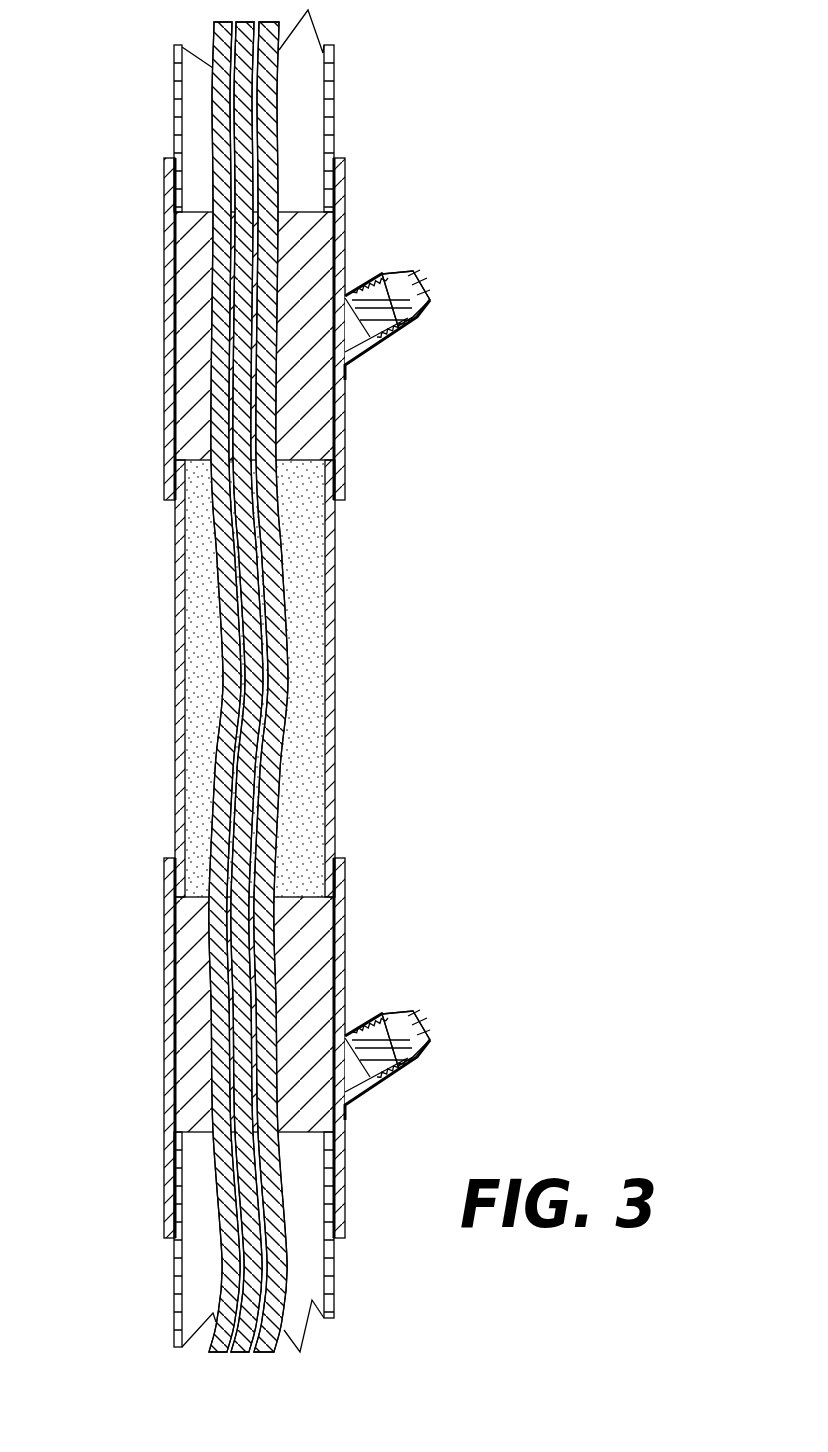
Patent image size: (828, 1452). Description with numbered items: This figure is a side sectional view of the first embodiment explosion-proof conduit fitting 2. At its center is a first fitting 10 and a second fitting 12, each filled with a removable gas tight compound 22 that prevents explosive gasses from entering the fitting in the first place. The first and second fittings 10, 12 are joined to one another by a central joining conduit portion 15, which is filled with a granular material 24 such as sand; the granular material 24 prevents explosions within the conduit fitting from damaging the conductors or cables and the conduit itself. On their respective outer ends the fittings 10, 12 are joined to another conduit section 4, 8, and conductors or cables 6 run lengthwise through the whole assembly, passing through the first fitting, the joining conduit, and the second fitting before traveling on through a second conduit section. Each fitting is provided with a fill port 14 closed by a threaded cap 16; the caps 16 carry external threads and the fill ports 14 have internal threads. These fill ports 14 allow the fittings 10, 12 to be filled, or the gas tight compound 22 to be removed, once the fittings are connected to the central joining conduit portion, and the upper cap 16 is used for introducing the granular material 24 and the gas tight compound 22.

The explosion-proof conduit fitting 2 is at (648, 112).
The conduit section 4 is at (175, 102).
The conductors or cables 6 is at (273, 580).
The conduit section 8 is at (180, 1253).
The first fitting 10 is at (165, 338).
The second fitting 12 is at (172, 1030).
The fill port 14 is at (387, 347).
The central joining conduit portion 15 is at (175, 687).
The threaded cap 16 is at (430, 302).
The gas tight compound 22 is at (303, 405).
The granular material 24 is at (303, 673).